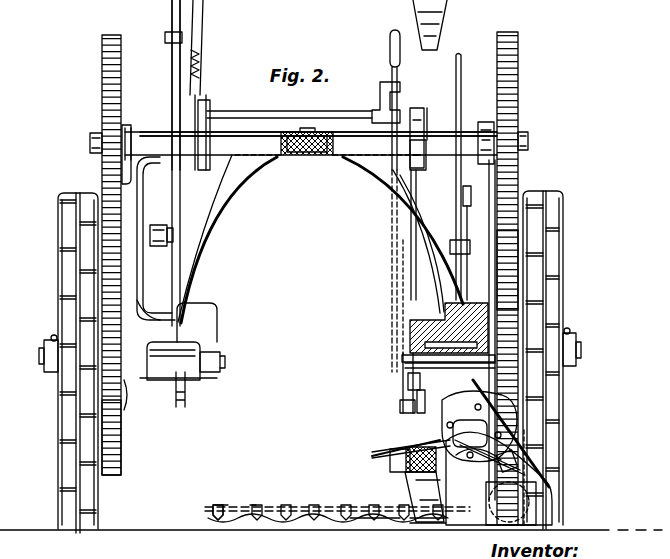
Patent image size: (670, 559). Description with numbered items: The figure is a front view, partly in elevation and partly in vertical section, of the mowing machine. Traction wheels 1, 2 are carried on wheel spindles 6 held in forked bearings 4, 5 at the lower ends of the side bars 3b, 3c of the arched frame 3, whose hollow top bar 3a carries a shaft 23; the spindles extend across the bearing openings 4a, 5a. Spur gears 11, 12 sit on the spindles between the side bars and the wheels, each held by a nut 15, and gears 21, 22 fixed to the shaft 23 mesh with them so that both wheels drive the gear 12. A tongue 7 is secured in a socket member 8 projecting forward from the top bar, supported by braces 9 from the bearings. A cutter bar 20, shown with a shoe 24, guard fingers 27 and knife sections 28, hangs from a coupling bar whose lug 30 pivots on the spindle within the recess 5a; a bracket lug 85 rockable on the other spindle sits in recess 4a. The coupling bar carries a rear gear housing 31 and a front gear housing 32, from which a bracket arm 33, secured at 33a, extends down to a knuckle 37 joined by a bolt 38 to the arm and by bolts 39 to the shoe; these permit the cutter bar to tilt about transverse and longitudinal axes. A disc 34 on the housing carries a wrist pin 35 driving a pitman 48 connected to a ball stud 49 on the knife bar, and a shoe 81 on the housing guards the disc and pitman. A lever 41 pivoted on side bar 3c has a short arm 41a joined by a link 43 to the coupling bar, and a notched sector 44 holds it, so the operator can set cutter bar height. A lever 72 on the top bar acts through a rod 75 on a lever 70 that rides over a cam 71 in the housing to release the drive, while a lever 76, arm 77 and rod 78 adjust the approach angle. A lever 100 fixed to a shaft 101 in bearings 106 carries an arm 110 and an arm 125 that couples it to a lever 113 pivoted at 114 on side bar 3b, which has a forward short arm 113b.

The traction wheel 1 is at (66, 474).
The traction wheel 2 is at (560, 442).
The arched frame 3 is at (155, 123).
The top bar 3a is at (241, 140).
The side bar 3b is at (115, 178).
The side bar 3c is at (515, 188).
The forked bearing 4 is at (187, 327).
The bearing opening 4a is at (192, 342).
The forked bearing 5 is at (430, 305).
The bearing opening 5a is at (430, 342).
The wheel spindle 6 is at (220, 360).
The tongue 7 is at (290, 155).
The socket member 8 is at (302, 150).
The brace 9 is at (210, 210).
The spur gear 11 is at (121, 442).
The spur gear 12 is at (508, 266).
The nut 15 is at (44, 366).
The cutter bar 20 is at (297, 495).
The gear 21 is at (110, 72).
The gear 22 is at (518, 64).
The shaft 23 is at (530, 143).
The shoe 24 is at (447, 0).
The guard fingers 27 is at (305, 8).
The knife sections 28 is at (252, 505).
The lug 30 is at (396, 370).
The gear housing 31 is at (403, 443).
The gear housing 32 is at (549, 425).
The bracket arm 33 is at (390, 455).
The securing point 33a is at (490, 465).
The disc 34 is at (523, 452).
The wrist pin 35 is at (513, 469).
The knuckle 37 is at (393, 472).
The bolt 38 is at (336, 482).
The bolts 39 is at (398, 508).
The lever 41 is at (458, 72).
The short arm 41a is at (405, 244).
The link 43 is at (405, 266).
The notched sector 44 is at (489, 186).
The pitman 48 is at (428, 520).
The ball stud 49 is at (365, 522).
The lever 70 is at (417, 400).
The cam 71 is at (385, 428).
The lever 72 is at (397, 70).
The rod 75 is at (393, 284).
The lever 76 is at (420, 160).
The arm 77 is at (400, 404).
The rod 78 is at (408, 378).
The shoe 81 is at (556, 505).
The bracket lug 85 is at (187, 387).
The lever 100 is at (200, 15).
The shaft 101 is at (270, 115).
The bearings 106 is at (208, 157).
The arm 110 is at (380, 98).
The lever 113 is at (175, 213).
The short arm 113b is at (173, 287).
The pivot 114 is at (178, 233).
The arm 125 is at (177, 63).